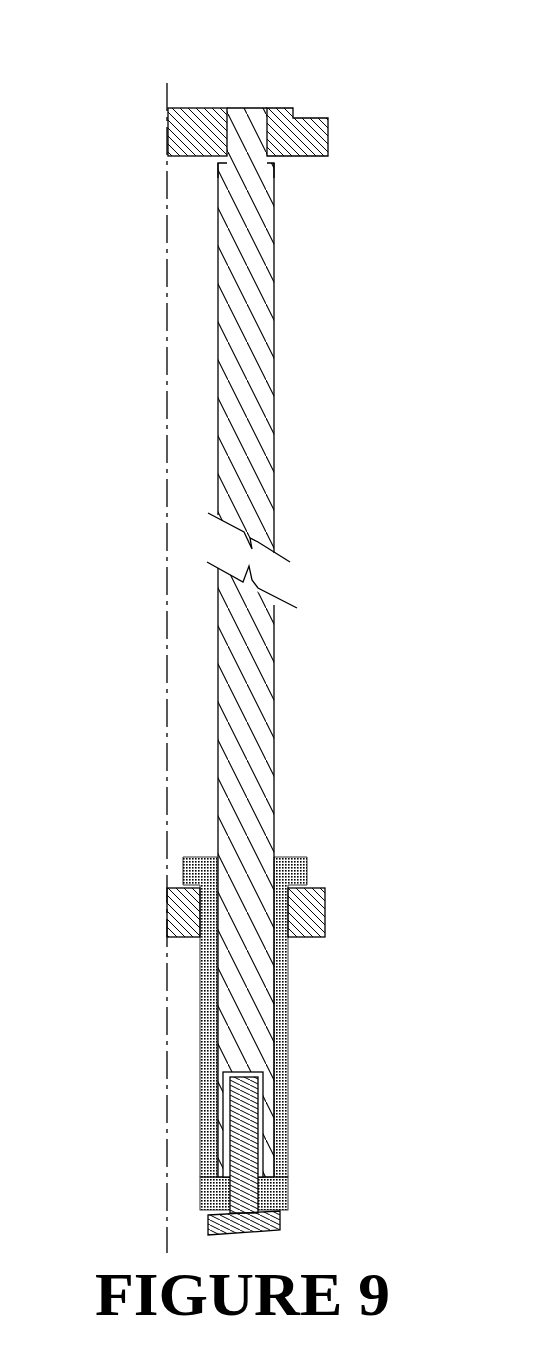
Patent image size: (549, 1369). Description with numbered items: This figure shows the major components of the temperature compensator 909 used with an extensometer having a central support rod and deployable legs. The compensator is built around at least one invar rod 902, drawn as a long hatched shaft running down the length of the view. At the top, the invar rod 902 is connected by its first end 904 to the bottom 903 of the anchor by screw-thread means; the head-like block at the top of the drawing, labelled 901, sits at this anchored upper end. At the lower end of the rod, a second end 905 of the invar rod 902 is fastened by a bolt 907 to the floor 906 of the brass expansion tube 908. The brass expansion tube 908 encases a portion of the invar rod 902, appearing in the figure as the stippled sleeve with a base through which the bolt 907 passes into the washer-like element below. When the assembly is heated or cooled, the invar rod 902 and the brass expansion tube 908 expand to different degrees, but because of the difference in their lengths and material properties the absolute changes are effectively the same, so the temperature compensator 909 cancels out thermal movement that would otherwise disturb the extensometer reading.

The head/nut 901 is at (328, 131).
The invar rod 902 is at (274, 350).
The bottom of the anchor 903 is at (283, 158).
The first end 904 is at (245, 108).
The second end 905 is at (288, 1183).
The floor 906 is at (217, 1177).
The bolt 907 is at (280, 1229).
The brass expansion tube 908 is at (288, 1022).
The temperature compensator 909 is at (232, 60).